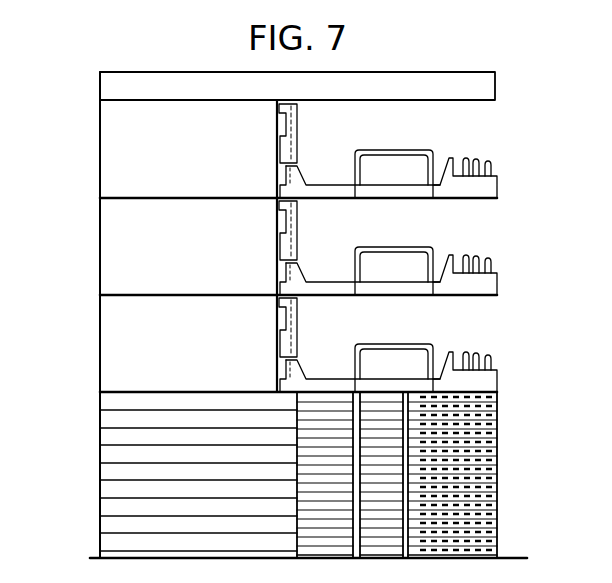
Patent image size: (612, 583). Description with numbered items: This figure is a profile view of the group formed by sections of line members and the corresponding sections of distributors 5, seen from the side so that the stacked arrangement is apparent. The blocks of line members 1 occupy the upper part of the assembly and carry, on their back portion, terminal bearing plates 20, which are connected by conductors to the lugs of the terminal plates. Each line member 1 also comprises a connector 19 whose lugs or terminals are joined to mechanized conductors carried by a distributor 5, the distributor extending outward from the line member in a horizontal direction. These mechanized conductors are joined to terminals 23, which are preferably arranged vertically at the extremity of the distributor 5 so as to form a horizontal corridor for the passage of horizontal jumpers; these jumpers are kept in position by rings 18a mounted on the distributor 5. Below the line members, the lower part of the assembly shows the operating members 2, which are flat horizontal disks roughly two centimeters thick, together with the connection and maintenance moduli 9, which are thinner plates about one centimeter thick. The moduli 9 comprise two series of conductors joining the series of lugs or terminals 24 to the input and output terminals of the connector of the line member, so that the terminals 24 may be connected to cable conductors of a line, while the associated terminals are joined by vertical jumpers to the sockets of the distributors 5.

The line member 1 is at (124, 147).
The operating member 2 is at (117, 510).
The distributor 5 is at (497, 188).
The connection and maintenance modulus 9 is at (497, 522).
The ring 18a is at (388, 148).
The connector 19 is at (298, 178).
The terminal bearing plate 20 is at (298, 135).
The terminal 23 is at (468, 158).
The lug or terminal 24 is at (497, 398).